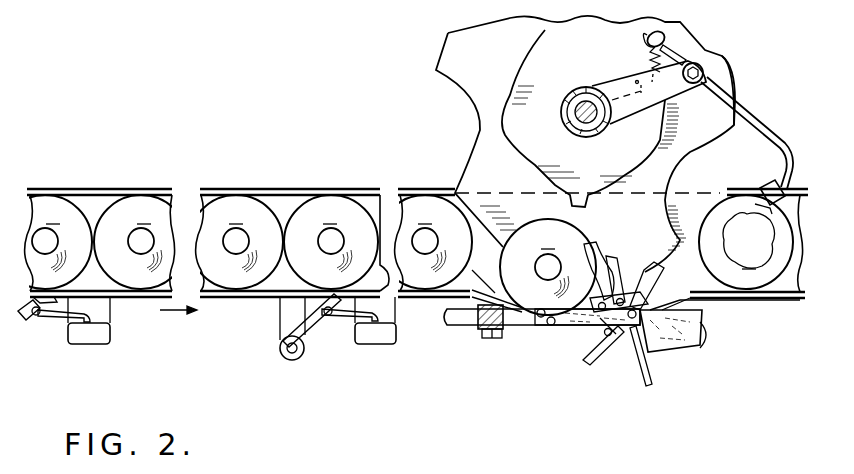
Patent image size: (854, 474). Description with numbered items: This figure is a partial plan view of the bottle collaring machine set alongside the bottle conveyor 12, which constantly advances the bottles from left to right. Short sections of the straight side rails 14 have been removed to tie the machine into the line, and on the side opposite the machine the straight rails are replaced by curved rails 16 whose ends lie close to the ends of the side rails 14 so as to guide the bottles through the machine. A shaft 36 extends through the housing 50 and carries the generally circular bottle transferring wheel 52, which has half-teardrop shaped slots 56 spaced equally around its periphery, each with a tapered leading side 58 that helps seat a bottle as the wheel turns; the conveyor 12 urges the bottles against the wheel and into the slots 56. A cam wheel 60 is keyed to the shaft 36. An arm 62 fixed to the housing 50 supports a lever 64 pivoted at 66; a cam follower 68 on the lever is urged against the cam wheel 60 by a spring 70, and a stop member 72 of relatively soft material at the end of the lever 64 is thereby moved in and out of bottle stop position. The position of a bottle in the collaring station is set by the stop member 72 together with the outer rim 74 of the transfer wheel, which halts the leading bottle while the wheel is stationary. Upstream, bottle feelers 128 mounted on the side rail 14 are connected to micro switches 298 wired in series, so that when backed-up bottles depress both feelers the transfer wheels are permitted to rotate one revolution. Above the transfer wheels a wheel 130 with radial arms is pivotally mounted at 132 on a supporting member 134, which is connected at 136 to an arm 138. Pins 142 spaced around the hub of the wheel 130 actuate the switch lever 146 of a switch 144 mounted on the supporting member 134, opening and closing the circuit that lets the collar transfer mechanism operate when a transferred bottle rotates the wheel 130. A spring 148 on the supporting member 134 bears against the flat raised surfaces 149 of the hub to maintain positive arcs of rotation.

The bottle conveyor 12 is at (294, 215).
The side rails 14 is at (262, 188).
The curved rails 16 is at (508, 298).
The shaft 36 is at (577, 105).
The housing 50 is at (594, 100).
The bottle transferring wheel 52 is at (508, 179).
The slots 56 is at (465, 111).
The tapered leading side 58 is at (470, 175).
The cam wheel 60 is at (596, 179).
The arm 62 is at (678, 91).
The lever 64 is at (766, 139).
The pivot 66 is at (700, 65).
The cam follower 68 is at (655, 28).
The spring 70 is at (672, 52).
The stop member 72 is at (764, 216).
The outer rim 74 is at (735, 80).
The bottle feelers 128 is at (28, 316).
The wheel 130 is at (652, 377).
The pivot mounting 132 is at (662, 291).
The supporting member 134 is at (462, 322).
The connection 136 is at (503, 331).
The arm 138 is at (483, 339).
The pins 142 is at (631, 271).
The switch 144 is at (700, 350).
The switch lever 146 is at (636, 361).
The spring 148 is at (600, 343).
The flat raised surfaces 149 is at (594, 281).
The micro switches 298 is at (92, 336).